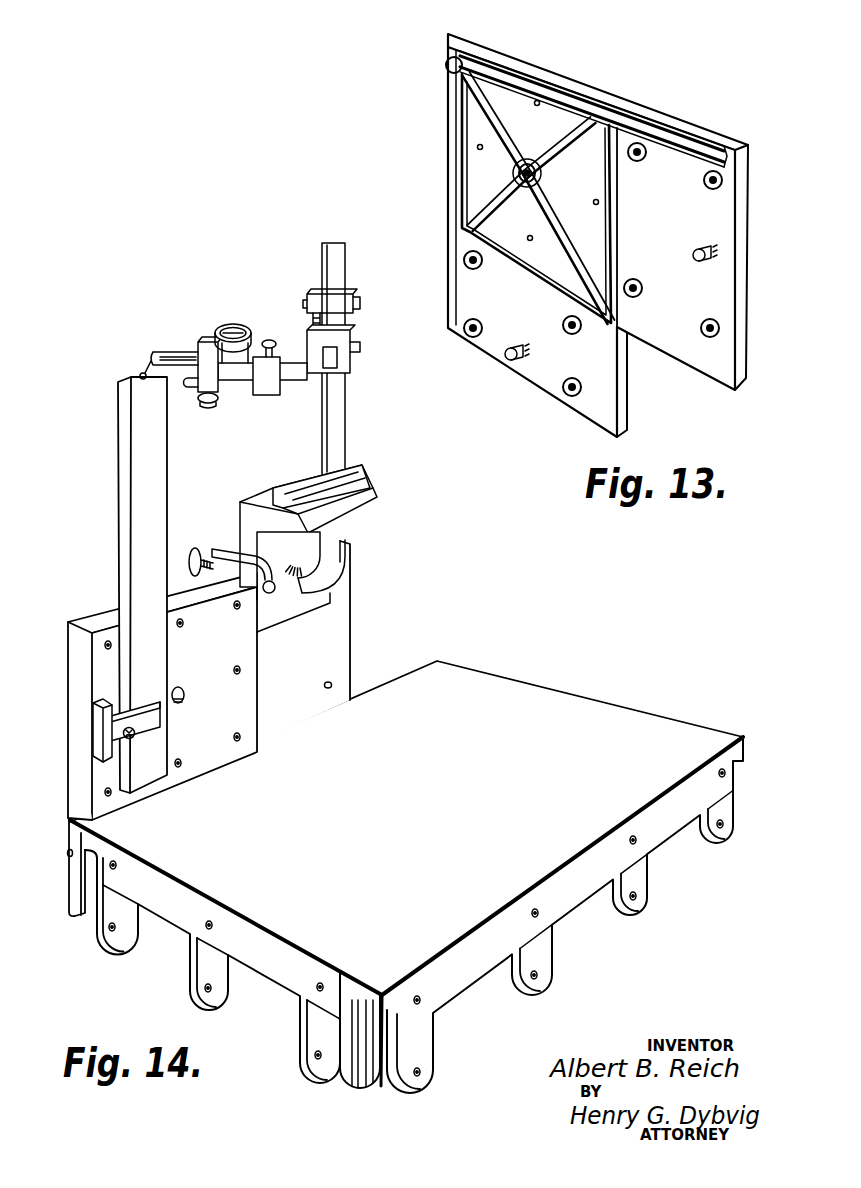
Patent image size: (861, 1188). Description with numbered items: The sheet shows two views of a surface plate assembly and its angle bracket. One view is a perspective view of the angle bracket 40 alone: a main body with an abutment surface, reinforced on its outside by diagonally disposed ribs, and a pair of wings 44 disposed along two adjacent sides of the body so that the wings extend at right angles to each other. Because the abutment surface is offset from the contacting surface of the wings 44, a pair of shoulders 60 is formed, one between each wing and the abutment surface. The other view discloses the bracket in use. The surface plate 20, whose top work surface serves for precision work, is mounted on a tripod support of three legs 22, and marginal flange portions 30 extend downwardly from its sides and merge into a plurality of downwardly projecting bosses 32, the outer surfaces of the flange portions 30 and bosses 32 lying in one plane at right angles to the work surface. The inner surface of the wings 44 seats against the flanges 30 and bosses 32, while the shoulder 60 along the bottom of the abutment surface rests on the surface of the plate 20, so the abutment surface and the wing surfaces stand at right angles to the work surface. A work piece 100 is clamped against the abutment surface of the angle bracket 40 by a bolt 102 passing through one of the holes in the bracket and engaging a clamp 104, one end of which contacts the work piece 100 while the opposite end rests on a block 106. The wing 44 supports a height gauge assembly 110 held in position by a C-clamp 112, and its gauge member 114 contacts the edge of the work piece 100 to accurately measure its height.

In FIG. 14, the surface plate 20 is at (724, 720).
In FIG. 14, the legs 22 is at (367, 1082).
In FIG. 14, the marginal flange portions 30 is at (283, 980).
In FIG. 14, the bosses 32 is at (317, 1063).
In FIG. 13, the angle bracket 40 is at (562, 73).
In FIG. 14, the angle bracket 40 is at (74, 684).
In FIG. 13, the wings 44 is at (730, 129).
In FIG. 13, the shoulders 60 is at (640, 103).
In FIG. 14, the work piece 100 is at (119, 508).
In FIG. 14, the bolt 102 is at (122, 739).
In FIG. 14, the clamp 104 is at (162, 727).
In FIG. 14, the block 106 is at (100, 720).
In FIG. 14, the height gauge assembly 110 is at (373, 507).
In FIG. 14, the C-clamp 112 is at (220, 539).
In FIG. 14, the gauge member 114 is at (148, 367).